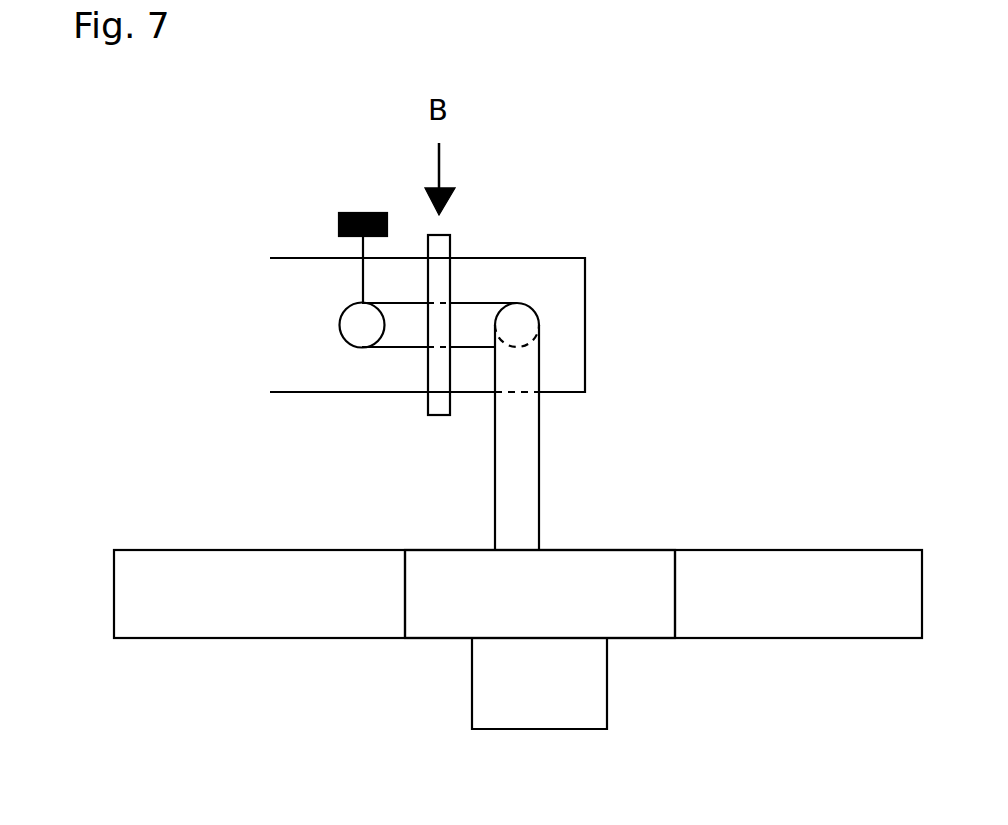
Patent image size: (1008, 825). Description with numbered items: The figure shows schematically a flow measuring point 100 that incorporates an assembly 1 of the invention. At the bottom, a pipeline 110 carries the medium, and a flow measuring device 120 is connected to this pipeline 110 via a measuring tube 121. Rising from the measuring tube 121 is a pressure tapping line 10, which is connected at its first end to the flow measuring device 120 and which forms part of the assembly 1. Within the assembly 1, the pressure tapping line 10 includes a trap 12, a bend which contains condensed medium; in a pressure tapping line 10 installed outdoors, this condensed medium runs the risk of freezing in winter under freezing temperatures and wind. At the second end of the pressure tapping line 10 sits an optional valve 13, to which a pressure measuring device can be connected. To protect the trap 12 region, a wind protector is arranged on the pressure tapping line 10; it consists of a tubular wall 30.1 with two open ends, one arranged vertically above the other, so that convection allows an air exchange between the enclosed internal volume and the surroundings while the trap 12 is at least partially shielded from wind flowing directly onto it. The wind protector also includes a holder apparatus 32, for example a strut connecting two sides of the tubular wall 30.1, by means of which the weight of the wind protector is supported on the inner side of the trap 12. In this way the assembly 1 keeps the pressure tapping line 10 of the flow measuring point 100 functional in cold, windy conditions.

The flow measuring point 100 is at (158, 258).
The pipeline 110 is at (525, 594).
The measuring tube 121 is at (540, 594).
The flow measuring device 120 is at (539, 683).
The pressure tapping line 10 is at (540, 460).
The tubular wall 30.1 is at (587, 300).
The assembly 1 is at (675, 325).
The valve 13 is at (360, 213).
The trap 12 is at (450, 325).
The holder apparatus 32 is at (440, 403).